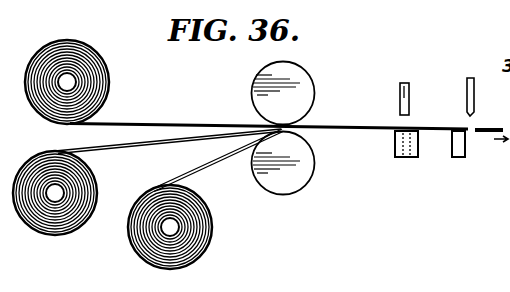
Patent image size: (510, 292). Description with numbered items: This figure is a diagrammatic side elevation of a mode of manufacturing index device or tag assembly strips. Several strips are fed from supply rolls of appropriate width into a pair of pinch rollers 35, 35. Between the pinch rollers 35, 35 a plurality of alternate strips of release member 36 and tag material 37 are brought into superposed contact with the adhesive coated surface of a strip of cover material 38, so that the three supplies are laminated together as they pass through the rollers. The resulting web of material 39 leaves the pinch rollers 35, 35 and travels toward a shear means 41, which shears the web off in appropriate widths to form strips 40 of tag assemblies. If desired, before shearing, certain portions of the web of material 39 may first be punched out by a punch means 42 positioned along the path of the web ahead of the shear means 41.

The pinch rollers 35 is at (312, 88).
The release member 36 is at (197, 122).
The tag material 37 is at (153, 143).
The cover material 38 is at (199, 166).
The web of material 39 is at (375, 133).
The strips 40 is at (487, 134).
The shear means 41 is at (467, 98).
The punch means 42 is at (400, 107).